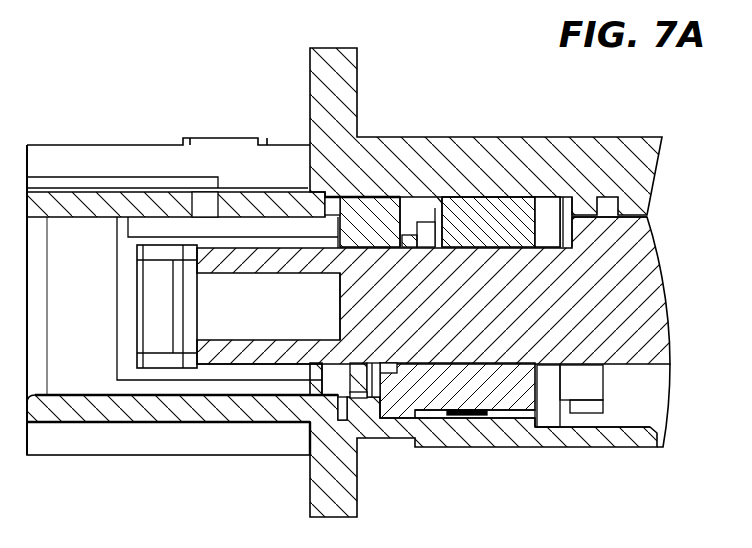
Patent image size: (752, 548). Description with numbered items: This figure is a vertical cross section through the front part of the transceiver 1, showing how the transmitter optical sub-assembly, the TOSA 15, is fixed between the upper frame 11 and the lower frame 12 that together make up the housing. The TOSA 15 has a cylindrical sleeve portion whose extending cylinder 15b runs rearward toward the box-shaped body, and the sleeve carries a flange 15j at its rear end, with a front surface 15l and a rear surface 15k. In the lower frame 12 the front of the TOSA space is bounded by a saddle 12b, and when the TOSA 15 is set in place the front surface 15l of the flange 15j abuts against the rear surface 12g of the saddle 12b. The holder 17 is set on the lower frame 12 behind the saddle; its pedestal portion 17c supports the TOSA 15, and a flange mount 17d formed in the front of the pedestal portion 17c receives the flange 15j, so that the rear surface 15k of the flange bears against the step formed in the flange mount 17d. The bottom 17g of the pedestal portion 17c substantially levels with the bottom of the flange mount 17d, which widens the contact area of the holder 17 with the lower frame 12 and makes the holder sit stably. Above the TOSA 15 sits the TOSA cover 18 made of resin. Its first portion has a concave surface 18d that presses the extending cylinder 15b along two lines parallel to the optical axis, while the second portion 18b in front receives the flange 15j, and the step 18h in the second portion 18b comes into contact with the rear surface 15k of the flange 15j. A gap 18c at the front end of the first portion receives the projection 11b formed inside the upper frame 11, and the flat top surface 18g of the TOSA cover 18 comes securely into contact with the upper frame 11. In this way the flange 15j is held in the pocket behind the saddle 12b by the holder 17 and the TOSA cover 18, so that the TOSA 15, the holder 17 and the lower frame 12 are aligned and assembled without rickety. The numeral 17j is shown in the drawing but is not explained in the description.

The transceiver 1 is at (97, 105).
The upper frame 11 is at (312, 84).
The projection 11b is at (416, 210).
The lower frame 12 is at (310, 496).
The saddle 12b is at (290, 418).
The rear surface of saddle 12g is at (332, 427).
The transmitter optical sub-assembly (TOSA) 15 is at (665, 283).
The extending cylinder 15b is at (562, 272).
The flange 15j is at (372, 425).
The rear surface of flange 15k is at (396, 366).
The front surface of flange 15l is at (320, 352).
The holder 17 is at (472, 421).
The pedestal portion 17c is at (500, 413).
The flange mount 17d is at (358, 432).
The bottom of pedestal portion 17g is at (432, 422).
The projection of coupling member 17j is at (375, 383).
The TOSA cover 18 is at (504, 214).
The second portion 18b is at (340, 256).
The gap 18c is at (420, 248).
The concave surface 18d is at (520, 249).
The flat top surface 18g is at (454, 206).
The step 18h is at (346, 216).